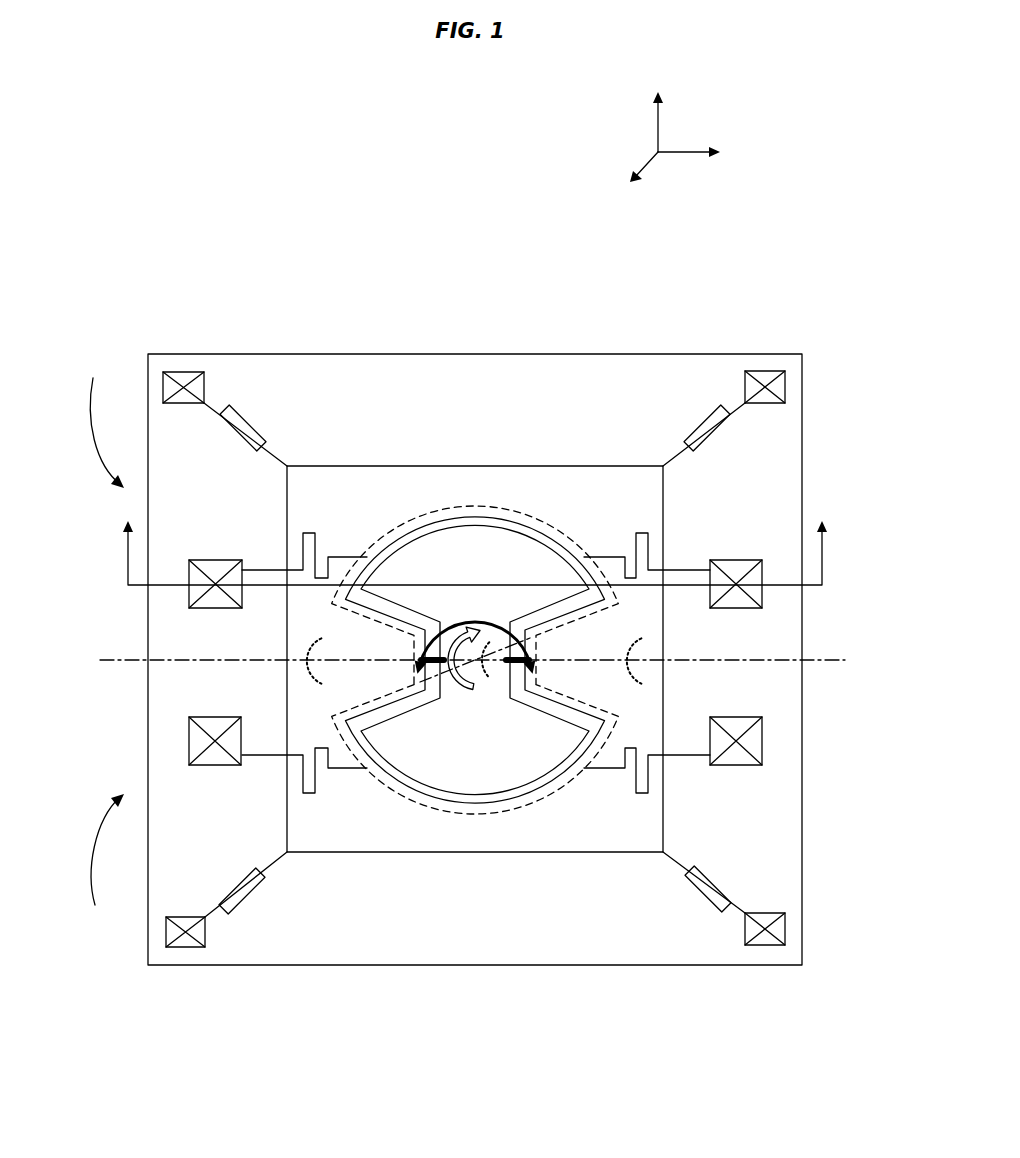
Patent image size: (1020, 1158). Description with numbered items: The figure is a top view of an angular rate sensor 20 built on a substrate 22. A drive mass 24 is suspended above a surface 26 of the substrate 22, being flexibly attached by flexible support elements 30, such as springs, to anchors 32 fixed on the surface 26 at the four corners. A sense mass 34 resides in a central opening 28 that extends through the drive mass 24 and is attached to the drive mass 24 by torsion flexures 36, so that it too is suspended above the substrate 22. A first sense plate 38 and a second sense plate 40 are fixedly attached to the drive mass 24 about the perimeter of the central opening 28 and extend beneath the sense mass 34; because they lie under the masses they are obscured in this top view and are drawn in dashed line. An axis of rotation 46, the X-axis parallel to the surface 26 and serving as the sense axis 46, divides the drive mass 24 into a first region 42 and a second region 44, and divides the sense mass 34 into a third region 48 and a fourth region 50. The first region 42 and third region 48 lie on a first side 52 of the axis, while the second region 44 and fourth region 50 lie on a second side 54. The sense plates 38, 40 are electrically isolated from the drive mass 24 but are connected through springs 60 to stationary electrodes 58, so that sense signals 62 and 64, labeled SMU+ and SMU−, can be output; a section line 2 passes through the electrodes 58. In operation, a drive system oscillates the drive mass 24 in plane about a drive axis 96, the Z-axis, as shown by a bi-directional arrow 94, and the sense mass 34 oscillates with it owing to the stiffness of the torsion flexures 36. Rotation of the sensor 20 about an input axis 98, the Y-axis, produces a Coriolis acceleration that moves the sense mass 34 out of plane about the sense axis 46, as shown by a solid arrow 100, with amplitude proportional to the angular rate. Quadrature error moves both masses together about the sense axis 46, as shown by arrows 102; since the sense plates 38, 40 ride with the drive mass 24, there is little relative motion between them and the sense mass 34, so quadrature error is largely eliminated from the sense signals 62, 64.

The section line 2- 2 is at (475, 542).
The angular rate sensor 20 is at (472, 599).
The substrate 22 is at (280, 353).
The drive mass 24 is at (388, 477).
The surface 26 is at (474, 642).
The central opening 28 is at (467, 646).
The flexible support elements 30 is at (240, 408).
The anchors 32 is at (177, 372).
The sense mass 34 is at (475, 532).
The torsion flexures 36 is at (415, 682).
The first sense plate 38 is at (570, 540).
The second sense plate 40 is at (537, 801).
The first region 42 is at (315, 493).
The second region 44 is at (313, 826).
The axis of rotation 46 is at (164, 658).
The third region 48 is at (475, 588).
The fourth region 50 is at (475, 731).
The first side 52 is at (103, 420).
The second side 54 is at (104, 864).
The stationary electrodes 58 is at (208, 600).
The springs 60 is at (317, 548).
The sense signal 62 is at (193, 517).
The sense signal 64 is at (217, 778).
The bi-directional arrow 94 is at (476, 622).
The drive axis 96 is at (653, 155).
The input axis 98 is at (658, 132).
The solid arrow 100 is at (455, 690).
The arrows 102 is at (496, 684).